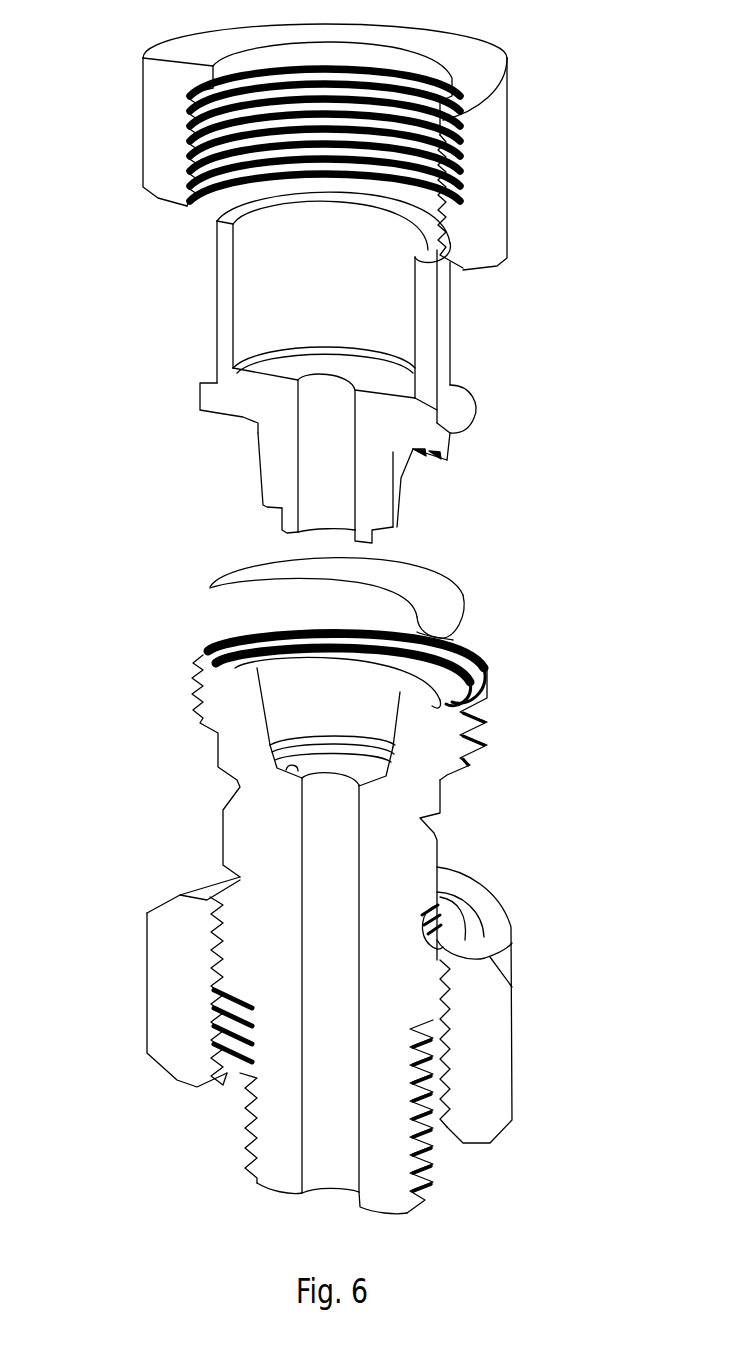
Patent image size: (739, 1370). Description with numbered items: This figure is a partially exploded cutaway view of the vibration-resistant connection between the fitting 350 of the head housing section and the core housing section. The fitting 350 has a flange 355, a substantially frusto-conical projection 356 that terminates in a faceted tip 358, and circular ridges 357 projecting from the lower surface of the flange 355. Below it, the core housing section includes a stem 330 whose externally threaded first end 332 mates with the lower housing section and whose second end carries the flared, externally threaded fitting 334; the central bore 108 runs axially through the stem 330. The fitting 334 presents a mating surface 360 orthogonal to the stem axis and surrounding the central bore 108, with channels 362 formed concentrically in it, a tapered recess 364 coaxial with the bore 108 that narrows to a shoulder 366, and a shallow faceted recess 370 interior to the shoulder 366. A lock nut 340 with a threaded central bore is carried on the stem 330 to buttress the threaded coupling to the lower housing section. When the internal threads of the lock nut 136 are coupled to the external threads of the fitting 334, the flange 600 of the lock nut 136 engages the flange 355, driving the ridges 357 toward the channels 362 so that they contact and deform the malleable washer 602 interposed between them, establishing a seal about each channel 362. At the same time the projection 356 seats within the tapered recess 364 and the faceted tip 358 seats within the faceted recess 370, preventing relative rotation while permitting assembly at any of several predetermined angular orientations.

The lock nut 136 is at (140, 131).
The flange 600 is at (442, 132).
The fitting 350 is at (210, 299).
The flange 355 is at (466, 411).
The frusto-conical projection 356 is at (260, 448).
The circular ridges 357 is at (412, 452).
The faceted tip 358 is at (278, 528).
The washer 602 is at (210, 587).
The mating surface 360 is at (212, 653).
The channels 362 is at (440, 650).
The tapered recess 364 is at (287, 712).
The shoulder 366 is at (280, 748).
The faceted recess 370 is at (300, 773).
The fitting 334 is at (500, 717).
The stem 330 is at (438, 841).
The central bore 108 is at (325, 1202).
The lock nut 340 is at (147, 1010).
The first end 332 is at (433, 1178).